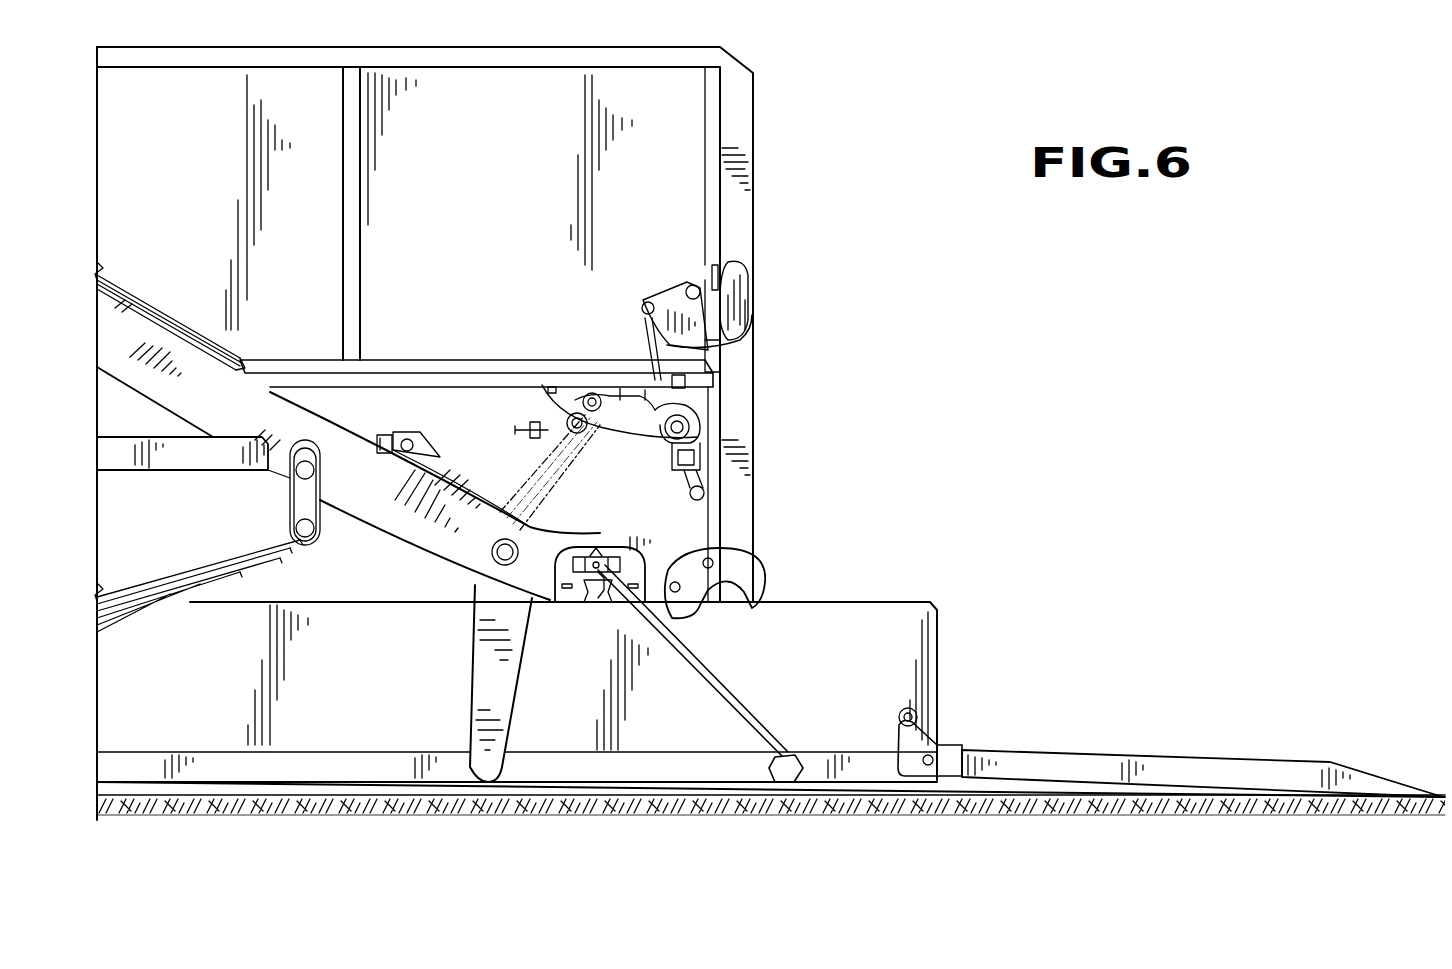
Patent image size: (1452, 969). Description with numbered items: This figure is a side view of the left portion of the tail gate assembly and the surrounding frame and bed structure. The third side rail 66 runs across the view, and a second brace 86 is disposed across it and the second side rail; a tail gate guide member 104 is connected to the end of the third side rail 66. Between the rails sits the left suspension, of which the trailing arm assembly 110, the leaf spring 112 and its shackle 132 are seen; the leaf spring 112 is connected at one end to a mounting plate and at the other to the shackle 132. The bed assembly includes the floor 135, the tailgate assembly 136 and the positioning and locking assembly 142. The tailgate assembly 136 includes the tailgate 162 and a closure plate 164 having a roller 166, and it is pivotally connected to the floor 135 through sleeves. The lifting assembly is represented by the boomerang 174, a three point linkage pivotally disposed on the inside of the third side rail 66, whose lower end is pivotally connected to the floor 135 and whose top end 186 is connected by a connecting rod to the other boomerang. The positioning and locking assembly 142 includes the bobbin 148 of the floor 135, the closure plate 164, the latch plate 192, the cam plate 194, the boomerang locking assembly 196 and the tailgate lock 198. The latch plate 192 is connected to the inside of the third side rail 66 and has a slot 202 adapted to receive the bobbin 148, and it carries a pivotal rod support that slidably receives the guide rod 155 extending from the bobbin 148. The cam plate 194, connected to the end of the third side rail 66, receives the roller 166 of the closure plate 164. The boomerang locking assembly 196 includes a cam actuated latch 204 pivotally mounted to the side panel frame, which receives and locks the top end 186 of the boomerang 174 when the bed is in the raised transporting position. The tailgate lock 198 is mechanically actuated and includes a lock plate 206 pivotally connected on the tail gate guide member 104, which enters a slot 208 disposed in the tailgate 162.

The third side rail 66 is at (183, 348).
The second brace 86 is at (157, 455).
The tail gate guide member 104 is at (740, 77).
The trailing arm assembly 110 is at (486, 785).
The leaf spring 112 is at (152, 620).
The shackle 132 is at (300, 505).
The floor 135 is at (302, 800).
The tailgate assembly 136 is at (1018, 800).
The positioning and locking assembly 142 is at (762, 432).
The bobbin 148 is at (795, 757).
The guide rod 155 is at (738, 703).
The tailgate 162 is at (1265, 762).
The closure plate 164 is at (955, 745).
The roller 166 is at (915, 714).
The boomerang 174 is at (455, 655).
The top end of boomerang 174 186 is at (414, 430).
The latch plate 192 is at (680, 527).
The cam plate 194 is at (762, 580).
The boomerang locking assembly 196 is at (712, 405).
The tailgate lock 198 is at (745, 265).
The slot 202 is at (600, 605).
The cam actuated latch 204 is at (545, 380).
The lock plate 206 is at (760, 325).
The slot 208 is at (695, 285).